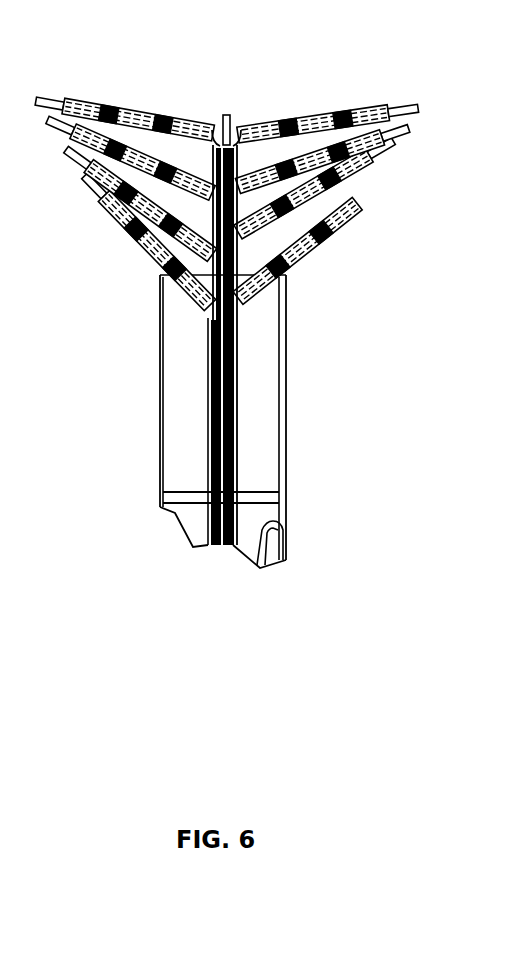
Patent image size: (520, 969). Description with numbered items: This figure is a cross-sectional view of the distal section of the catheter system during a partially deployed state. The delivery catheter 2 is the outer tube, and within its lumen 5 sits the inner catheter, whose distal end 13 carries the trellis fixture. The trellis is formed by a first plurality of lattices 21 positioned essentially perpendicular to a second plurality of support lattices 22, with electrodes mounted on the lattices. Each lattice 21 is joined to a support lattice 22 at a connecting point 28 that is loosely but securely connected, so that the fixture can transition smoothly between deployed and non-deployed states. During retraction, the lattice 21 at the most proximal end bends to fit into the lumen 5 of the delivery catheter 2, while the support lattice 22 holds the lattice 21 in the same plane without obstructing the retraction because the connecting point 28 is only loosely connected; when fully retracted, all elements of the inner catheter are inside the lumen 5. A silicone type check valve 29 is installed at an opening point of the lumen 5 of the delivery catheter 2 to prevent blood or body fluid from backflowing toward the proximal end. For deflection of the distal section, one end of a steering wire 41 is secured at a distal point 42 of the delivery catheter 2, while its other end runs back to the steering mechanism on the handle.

The delivery catheter 2 is at (287, 413).
The lumen 5 is at (280, 352).
The distal end 13 is at (238, 113).
The lattice 21 is at (219, 101).
The support lattice 22 is at (380, 160).
The connecting point 28 is at (412, 103).
The check valve 29 is at (285, 494).
The steering wire 41 is at (285, 560).
The distal point 42 is at (283, 523).